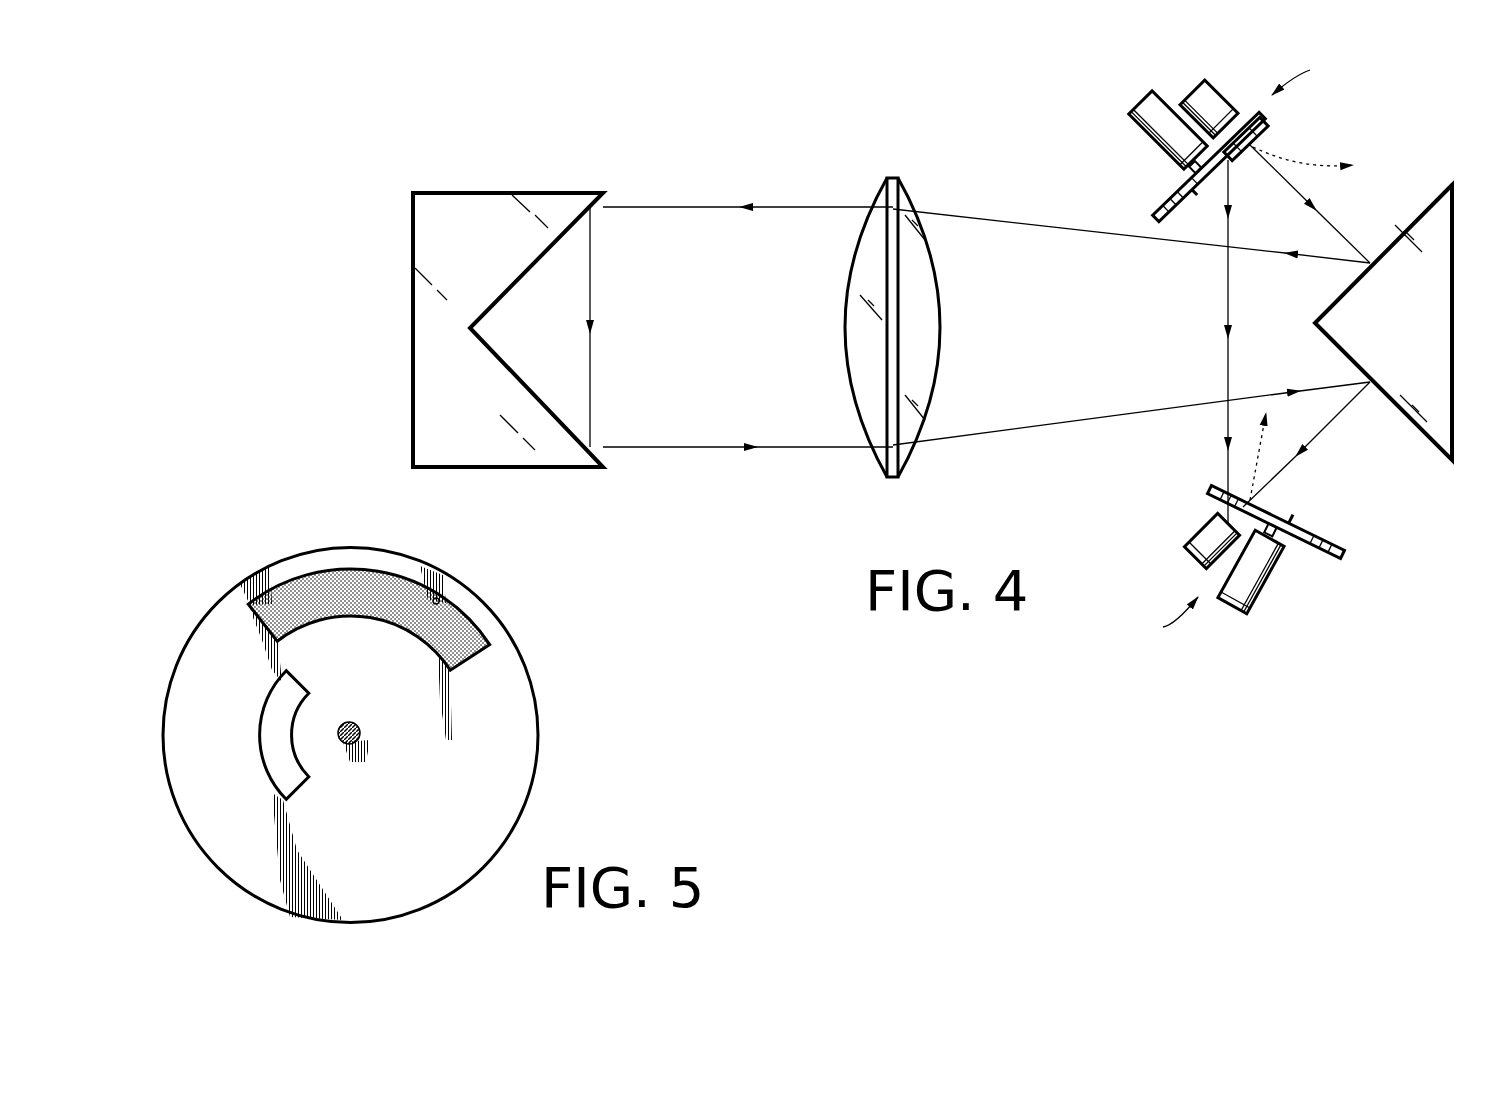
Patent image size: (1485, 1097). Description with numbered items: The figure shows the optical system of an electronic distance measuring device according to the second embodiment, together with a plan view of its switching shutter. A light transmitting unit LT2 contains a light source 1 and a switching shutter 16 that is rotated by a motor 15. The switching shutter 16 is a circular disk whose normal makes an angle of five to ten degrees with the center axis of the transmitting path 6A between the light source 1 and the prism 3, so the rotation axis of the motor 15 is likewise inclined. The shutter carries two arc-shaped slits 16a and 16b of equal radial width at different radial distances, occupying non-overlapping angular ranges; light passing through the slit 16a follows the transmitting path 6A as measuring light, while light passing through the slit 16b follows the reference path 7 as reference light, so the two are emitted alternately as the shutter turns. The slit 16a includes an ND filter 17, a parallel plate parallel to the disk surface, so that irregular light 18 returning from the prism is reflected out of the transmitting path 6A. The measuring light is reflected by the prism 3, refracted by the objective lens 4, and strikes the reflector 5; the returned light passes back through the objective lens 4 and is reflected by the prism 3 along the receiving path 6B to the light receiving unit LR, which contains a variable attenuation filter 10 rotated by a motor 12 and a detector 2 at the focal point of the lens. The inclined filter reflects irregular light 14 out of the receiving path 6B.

In FIG. 4, the light source 1 is at (1220, 88).
In FIG. 4, the detector 2 is at (1197, 540).
In FIG. 4, the optical path dividing prism 3 is at (1440, 352).
In FIG. 4, the objective lens 4 is at (935, 325).
In FIG. 4, the reflector 5 is at (470, 212).
In FIG. 4, the transmitting path 6A is at (768, 205).
In FIG. 4, the receiving path 6B is at (722, 452).
In FIG. 4, the reference path 7 is at (1226, 356).
In FIG. 4, the variable attenuation filter 10 is at (1322, 542).
In FIG. 4, the motor 12 is at (1262, 598).
In FIG. 4, the irregular light 14 is at (1292, 437).
In FIG. 4, the motor 15 is at (1140, 102).
In FIG. 4, the switching shutter 16 is at (1160, 200).
In FIG. 5, the switching shutter 16 is at (528, 746).
In FIG. 5, the arc-shaped slit 16a is at (441, 601).
In FIG. 5, the arc-shaped slit 16b is at (263, 738).
In FIG. 4, the ND filter 17 is at (1268, 128).
In FIG. 5, the ND filter 17 is at (340, 580).
In FIG. 4, the irregular light 18 is at (1348, 158).
In FIG. 4, the light transmitting unit LT2 is at (1299, 67).
In FIG. 4, the light receiving unit LR is at (1163, 611).